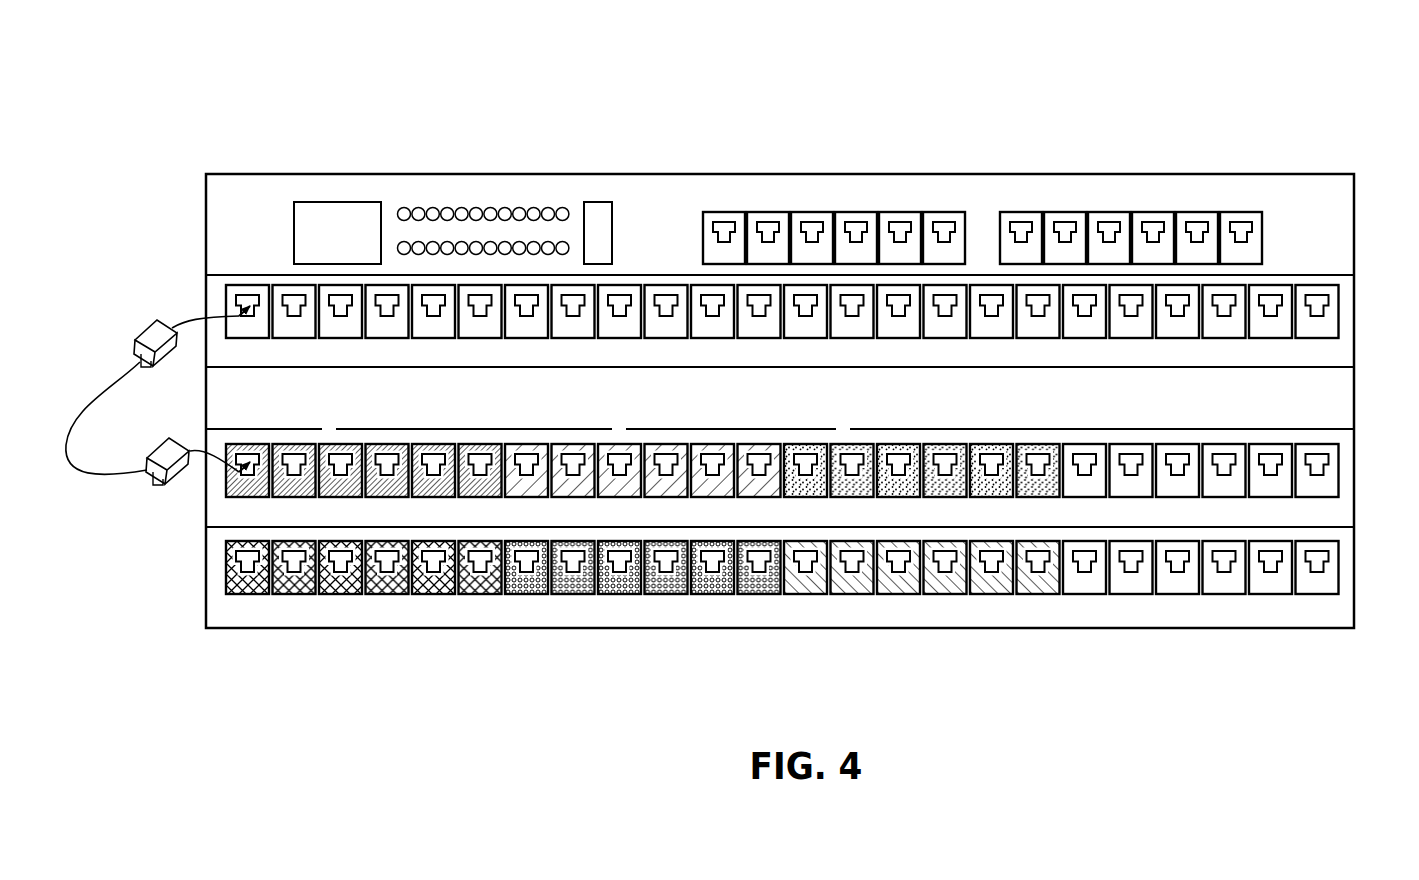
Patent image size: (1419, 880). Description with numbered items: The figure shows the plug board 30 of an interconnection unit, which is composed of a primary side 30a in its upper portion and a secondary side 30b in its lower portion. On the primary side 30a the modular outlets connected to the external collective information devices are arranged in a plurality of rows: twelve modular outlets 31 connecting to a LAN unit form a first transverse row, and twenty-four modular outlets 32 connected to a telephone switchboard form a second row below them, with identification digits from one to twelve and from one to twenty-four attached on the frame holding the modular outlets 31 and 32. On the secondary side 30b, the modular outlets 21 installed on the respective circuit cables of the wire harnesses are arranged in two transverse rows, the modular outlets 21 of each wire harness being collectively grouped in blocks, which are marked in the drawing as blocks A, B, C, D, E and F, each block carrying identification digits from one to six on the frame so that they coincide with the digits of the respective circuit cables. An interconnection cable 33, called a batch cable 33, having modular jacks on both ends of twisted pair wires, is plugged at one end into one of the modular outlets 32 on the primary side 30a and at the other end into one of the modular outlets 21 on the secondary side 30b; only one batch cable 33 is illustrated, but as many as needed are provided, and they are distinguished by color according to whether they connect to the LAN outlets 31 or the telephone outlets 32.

The plug board 30 is at (1298, 132).
The primary side 30a is at (1360, 231).
The secondary side 30b is at (1362, 544).
The modular outlets 31 is at (708, 199).
The modular outlets 32 is at (248, 274).
The modular outlets 21 is at (242, 436).
The interconnection cable 33 is at (80, 488).
The jack group A is at (329, 430).
The jack group B is at (619, 431).
The jack group C is at (843, 433).
The jack group D is at (280, 610).
The jack group E is at (559, 610).
The jack group F is at (838, 610).